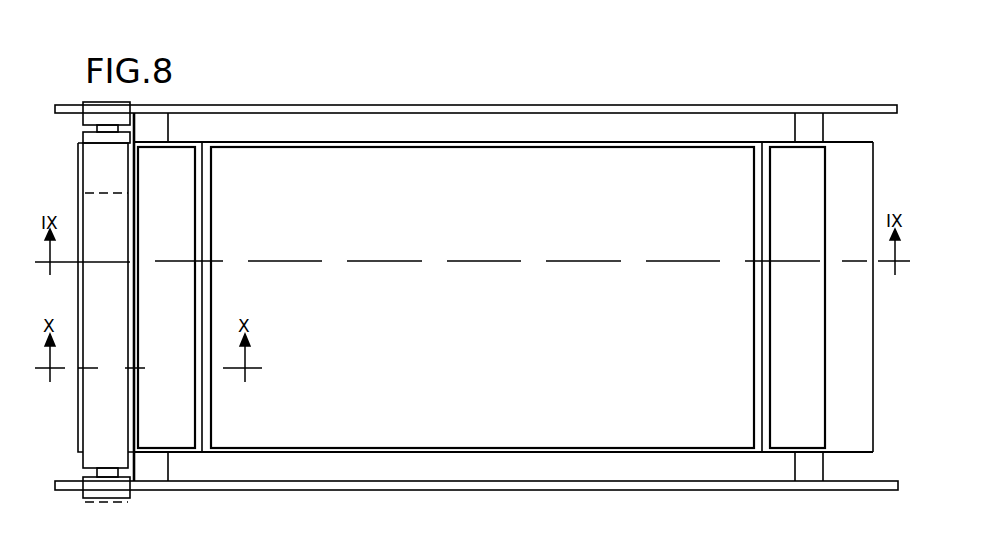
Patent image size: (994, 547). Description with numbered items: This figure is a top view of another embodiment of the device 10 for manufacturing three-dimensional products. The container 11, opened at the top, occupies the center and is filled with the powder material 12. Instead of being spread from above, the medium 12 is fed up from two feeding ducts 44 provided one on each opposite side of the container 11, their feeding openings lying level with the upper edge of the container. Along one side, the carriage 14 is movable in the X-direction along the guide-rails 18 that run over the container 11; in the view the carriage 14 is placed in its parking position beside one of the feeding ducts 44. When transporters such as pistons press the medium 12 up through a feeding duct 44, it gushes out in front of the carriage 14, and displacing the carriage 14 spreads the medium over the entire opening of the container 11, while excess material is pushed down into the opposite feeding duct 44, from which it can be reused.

The device 10 is at (468, 502).
The container 11 is at (615, 453).
The powder material 12 is at (318, 423).
The carriage 14 is at (107, 400).
The guide-rails 18 is at (843, 110).
The feeding duct 44 is at (175, 423).